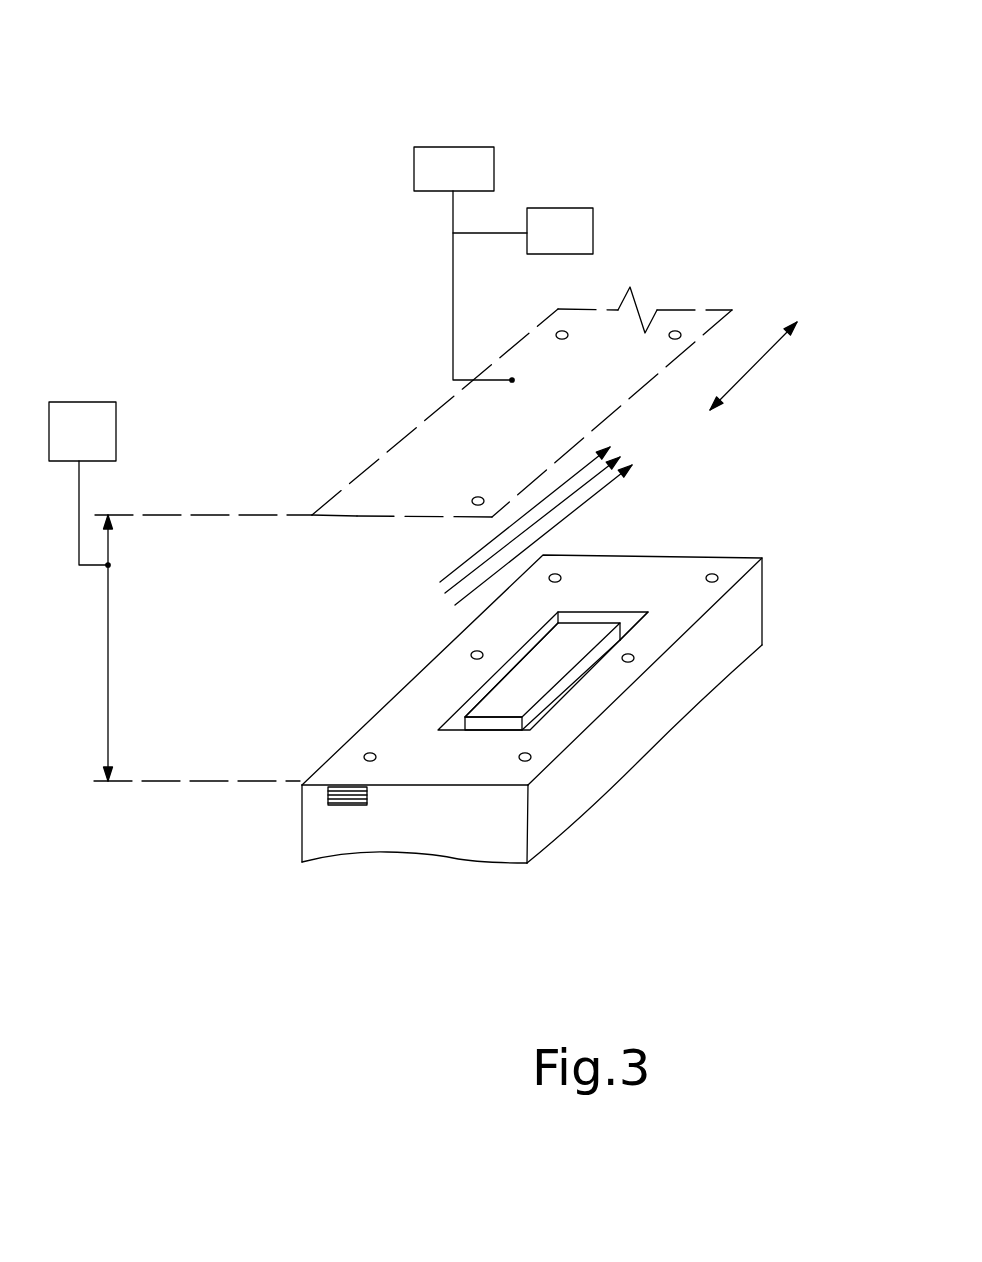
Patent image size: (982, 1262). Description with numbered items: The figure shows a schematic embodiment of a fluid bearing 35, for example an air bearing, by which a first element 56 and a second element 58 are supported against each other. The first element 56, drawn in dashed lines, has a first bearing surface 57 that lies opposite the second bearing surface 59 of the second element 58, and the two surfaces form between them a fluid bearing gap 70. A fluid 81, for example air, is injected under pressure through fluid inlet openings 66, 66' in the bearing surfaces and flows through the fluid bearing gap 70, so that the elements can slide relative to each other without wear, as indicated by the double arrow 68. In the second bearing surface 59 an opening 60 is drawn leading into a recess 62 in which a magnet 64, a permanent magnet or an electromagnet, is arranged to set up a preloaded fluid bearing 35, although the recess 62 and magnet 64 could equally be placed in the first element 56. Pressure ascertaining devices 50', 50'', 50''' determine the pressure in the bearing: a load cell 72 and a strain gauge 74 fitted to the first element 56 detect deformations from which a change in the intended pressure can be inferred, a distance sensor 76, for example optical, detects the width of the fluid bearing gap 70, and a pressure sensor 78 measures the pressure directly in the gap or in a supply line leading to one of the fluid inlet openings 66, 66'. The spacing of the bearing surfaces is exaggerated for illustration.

The load cell 72 is at (455, 163).
The strain gauge 74 is at (570, 218).
The distance sensor 76 is at (92, 415).
The pressure ascertaining device 50' is at (622, 74).
The pressure ascertaining device 50'' is at (169, 237).
The pressure ascertaining device 50''' is at (280, 1023).
The first element 56 is at (435, 440).
The first bearing surface 57 is at (349, 519).
The fluid inlet opening 66 is at (644, 366).
The fluid inlet opening 66' is at (770, 525).
The double arrow 68 is at (758, 362).
The fluid bearing 35 is at (712, 448).
The fluid 81 is at (583, 503).
The fluid bearing gap 70 is at (107, 634).
The second element 58 is at (501, 832).
The second bearing surface 59 is at (405, 782).
The recess 60 is at (547, 738).
The recess 62 is at (480, 700).
The magnet 64 is at (528, 690).
The pressure sensor 78 is at (355, 807).